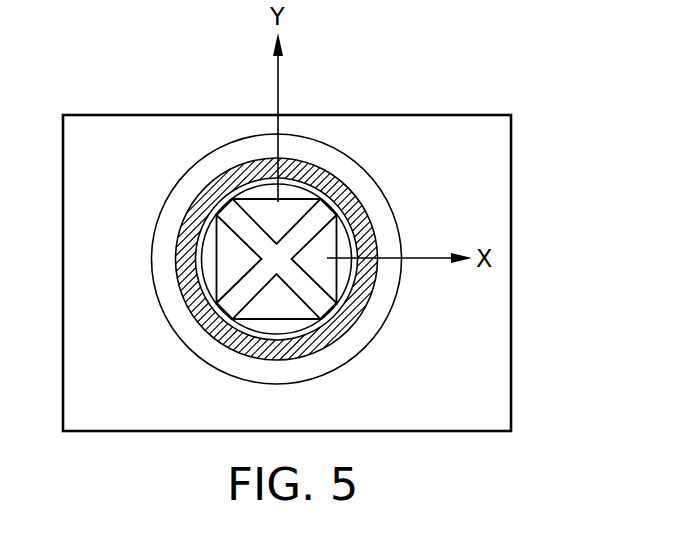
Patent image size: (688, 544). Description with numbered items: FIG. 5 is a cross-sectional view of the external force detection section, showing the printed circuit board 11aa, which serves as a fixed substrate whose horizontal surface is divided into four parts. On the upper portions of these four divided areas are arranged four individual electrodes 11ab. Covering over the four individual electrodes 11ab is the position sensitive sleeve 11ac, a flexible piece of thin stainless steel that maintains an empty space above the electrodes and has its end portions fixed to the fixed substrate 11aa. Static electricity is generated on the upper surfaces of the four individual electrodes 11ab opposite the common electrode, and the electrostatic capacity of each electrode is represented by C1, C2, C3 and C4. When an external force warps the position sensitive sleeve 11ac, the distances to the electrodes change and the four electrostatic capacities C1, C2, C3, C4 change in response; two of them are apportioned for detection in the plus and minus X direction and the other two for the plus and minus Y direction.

The printed circuit board 11aa is at (503, 157).
The individual electrodes 11ab is at (311, 197).
The position sensitive sleeve 11ac is at (383, 218).
The electrostatic capacity C1 is at (333, 289).
The electrostatic capacity C2 is at (258, 199).
The electrostatic capacity C3 is at (220, 291).
The electrostatic capacity C4 is at (280, 326).